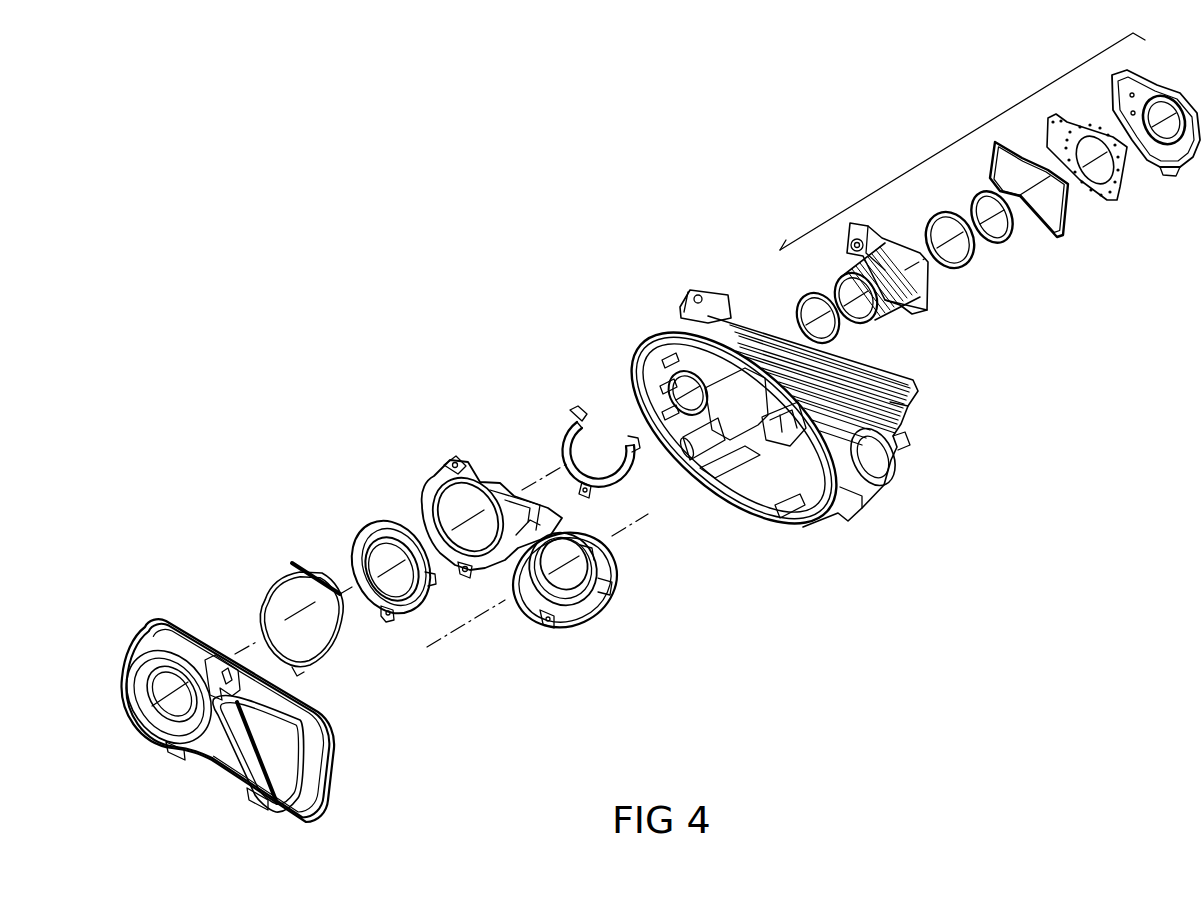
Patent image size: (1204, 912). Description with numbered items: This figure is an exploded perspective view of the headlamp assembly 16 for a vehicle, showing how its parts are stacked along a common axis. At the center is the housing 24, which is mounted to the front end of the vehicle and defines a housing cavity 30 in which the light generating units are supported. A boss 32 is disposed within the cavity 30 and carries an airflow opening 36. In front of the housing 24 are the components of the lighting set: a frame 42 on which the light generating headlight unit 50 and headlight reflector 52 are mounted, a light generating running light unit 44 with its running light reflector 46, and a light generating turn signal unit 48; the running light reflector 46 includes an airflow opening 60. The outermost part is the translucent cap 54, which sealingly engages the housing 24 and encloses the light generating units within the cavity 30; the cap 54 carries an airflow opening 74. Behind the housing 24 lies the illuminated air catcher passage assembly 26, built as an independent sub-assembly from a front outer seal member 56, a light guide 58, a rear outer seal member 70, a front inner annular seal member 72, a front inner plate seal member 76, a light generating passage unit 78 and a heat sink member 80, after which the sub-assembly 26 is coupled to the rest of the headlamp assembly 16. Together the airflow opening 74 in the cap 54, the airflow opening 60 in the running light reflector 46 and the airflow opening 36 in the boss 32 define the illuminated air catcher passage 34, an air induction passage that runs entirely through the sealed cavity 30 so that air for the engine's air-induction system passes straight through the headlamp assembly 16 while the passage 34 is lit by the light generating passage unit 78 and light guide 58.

The headlamp assembly 16 is at (404, 226).
The housing 24 is at (742, 496).
The illuminated air catcher passage assembly 26 is at (962, 141).
The housing cavity 30 is at (728, 466).
The boss 32 is at (657, 338).
The illuminated air catcher passage 34 is at (845, 288).
The airflow opening 36 is at (641, 362).
The frame 42 is at (432, 454).
The running light unit 44 is at (270, 584).
The running light reflector 46 is at (360, 550).
The turn signal unit 48 is at (565, 418).
The headlight unit 50 is at (548, 608).
The headlight reflector 52 is at (519, 583).
The translucent cap 54 is at (220, 776).
The front outer seal member 56 is at (790, 300).
The light guide 58 is at (893, 323).
The airflow opening 60 is at (381, 601).
The rear outer seal member 70 is at (977, 270).
The front inner annular seal member 72 is at (1011, 247).
The airflow opening 74 is at (155, 732).
The front inner plate seal member 76 is at (1069, 226).
The light generating passage unit 78 is at (1117, 190).
The heat sink member 80 is at (1131, 75).